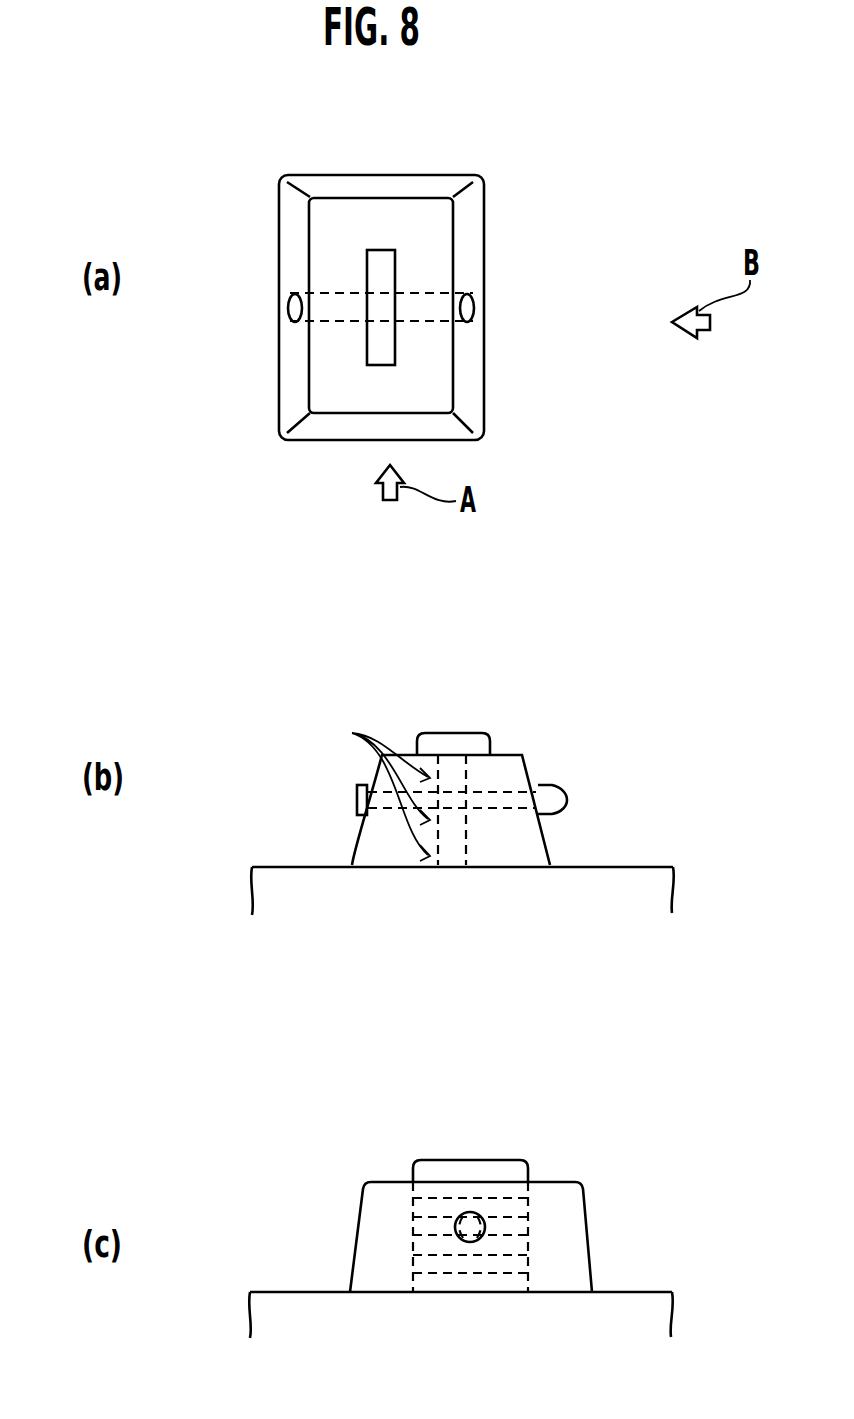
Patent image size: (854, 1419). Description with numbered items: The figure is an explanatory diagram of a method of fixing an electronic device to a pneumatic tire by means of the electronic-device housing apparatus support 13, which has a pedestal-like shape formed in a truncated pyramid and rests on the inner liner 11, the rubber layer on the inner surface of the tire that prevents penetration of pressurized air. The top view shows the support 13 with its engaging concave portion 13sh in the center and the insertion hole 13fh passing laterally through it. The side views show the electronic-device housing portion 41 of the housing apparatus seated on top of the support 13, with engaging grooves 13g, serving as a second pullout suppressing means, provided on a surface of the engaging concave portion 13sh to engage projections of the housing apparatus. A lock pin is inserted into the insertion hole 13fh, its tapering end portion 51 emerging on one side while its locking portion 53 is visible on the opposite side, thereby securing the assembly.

The inner liner 11 is at (655, 860).
The electronic-device housing apparatus support 13 is at (458, 174).
The engaging concave portion 13sh is at (372, 250).
The insertion hole 13fh is at (473, 306).
The engaging grooves 13g is at (352, 733).
The electronic-device housing portion 41 is at (437, 733).
The tapering end portion 51 is at (566, 787).
The locking portion 53 is at (357, 796).